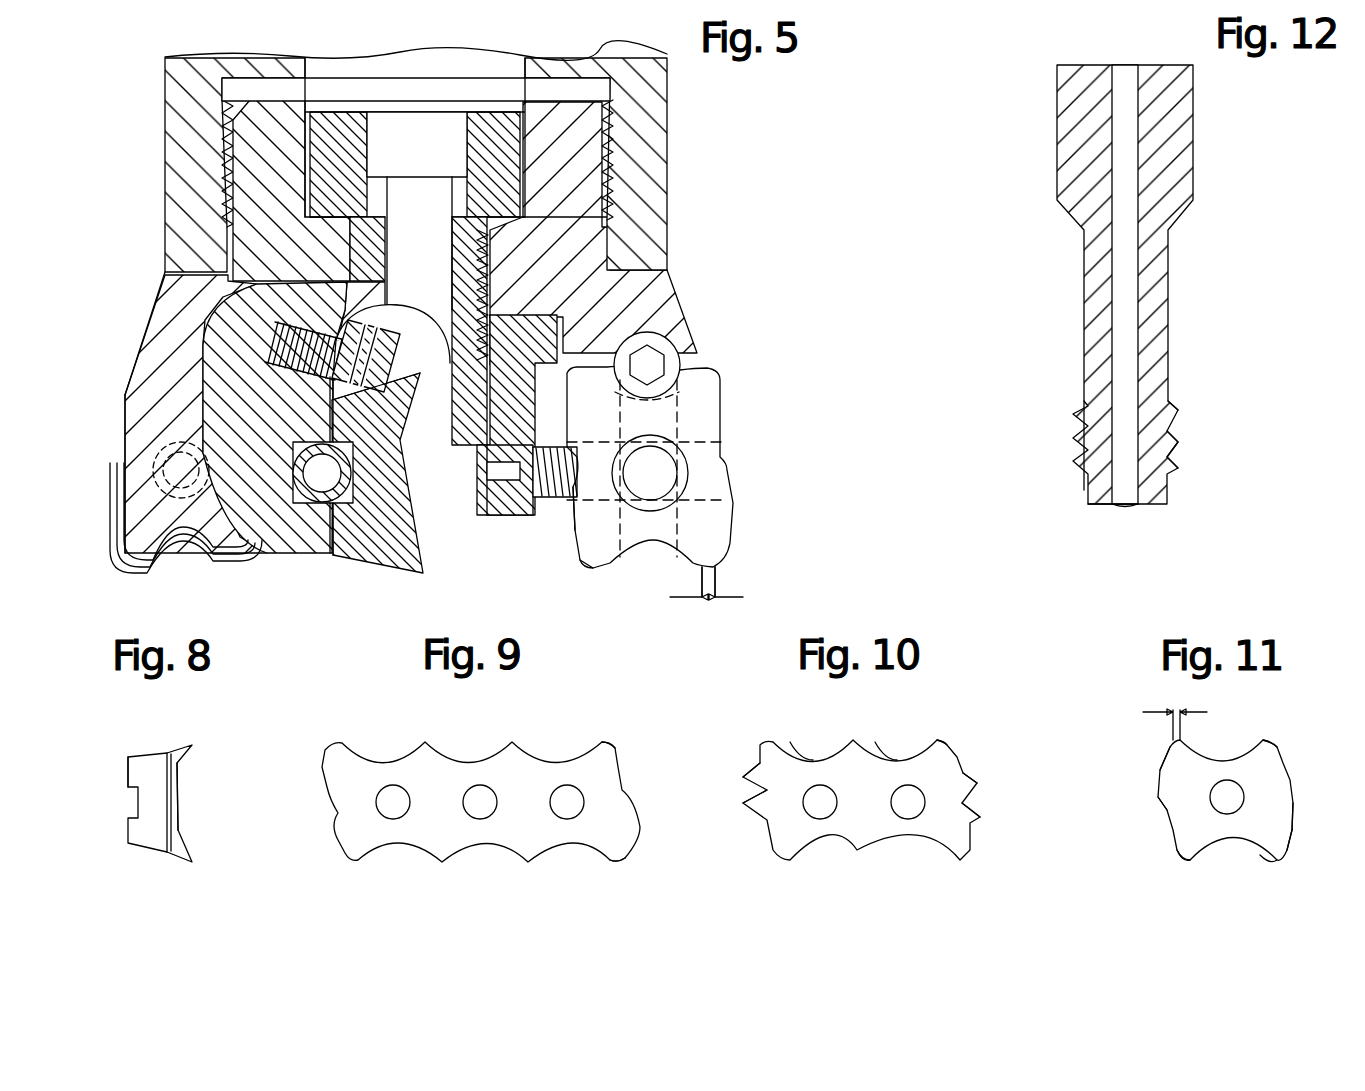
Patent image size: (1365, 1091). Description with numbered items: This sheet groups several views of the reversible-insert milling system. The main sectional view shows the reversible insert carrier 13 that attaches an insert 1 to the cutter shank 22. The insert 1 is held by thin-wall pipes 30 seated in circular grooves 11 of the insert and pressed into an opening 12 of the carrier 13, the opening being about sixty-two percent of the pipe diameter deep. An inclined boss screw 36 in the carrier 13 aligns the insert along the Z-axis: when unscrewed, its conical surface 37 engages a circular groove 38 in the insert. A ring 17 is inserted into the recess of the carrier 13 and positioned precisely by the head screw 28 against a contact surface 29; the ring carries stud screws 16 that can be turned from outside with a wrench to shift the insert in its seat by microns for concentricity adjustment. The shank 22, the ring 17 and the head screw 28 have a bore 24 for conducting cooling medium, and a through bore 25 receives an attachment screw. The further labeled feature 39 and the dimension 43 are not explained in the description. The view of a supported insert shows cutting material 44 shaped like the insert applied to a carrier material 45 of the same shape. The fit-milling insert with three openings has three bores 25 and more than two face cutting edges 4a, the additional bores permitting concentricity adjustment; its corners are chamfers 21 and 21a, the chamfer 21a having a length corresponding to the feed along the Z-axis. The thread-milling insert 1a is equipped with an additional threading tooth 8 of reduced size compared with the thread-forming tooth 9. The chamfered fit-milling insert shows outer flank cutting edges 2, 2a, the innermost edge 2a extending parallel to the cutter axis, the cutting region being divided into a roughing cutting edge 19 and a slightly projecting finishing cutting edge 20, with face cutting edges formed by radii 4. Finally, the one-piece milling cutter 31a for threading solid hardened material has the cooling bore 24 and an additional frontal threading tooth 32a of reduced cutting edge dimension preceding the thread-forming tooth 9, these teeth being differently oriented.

In FIG. 5, the reversible insert 1 is at (697, 403).
In FIG. 9, the reversible insert 1 is at (437, 760).
In FIG. 11, the reversible insert 1 is at (1290, 780).
In FIG. 10, the chain link plate 1a is at (858, 838).
In FIG. 5, the outer flank cutting edge 2 is at (737, 533).
In FIG. 12, the outer flank cutting edge 2 is at (1083, 494).
In FIG. 5, the outer flank cutting edge 2a is at (577, 540).
In FIG. 5, the radii 4 is at (593, 568).
In FIG. 12, the radii 4 is at (1092, 512).
In FIG. 12, the face cutting edge 4a is at (1108, 510).
In FIG. 10, the face cutting edge 4a is at (845, 735).
In FIG. 10, the additional threading tooth 8 is at (750, 782).
In FIG. 12, the thread-forming tooth 9 is at (1178, 412).
In FIG. 10, the thread-forming tooth 9 is at (745, 803).
In FIG. 8, the groove 11 is at (128, 805).
In FIG. 5, the opening 12 is at (287, 560).
In FIG. 5, the reversible insert carrier 13 is at (667, 327).
In FIG. 5, the stud screw 16 is at (487, 502).
In FIG. 5, the ring 17 is at (543, 340).
In FIG. 5, the roughing cutting edge 19 is at (428, 548).
In FIG. 11, the roughing cutting edge 19 is at (1162, 765).
In FIG. 11, the finishing cutting edge 20 is at (1160, 797).
In FIG. 9, the chamfer 21 is at (627, 855).
In FIG. 11, the chamfer 21 is at (1285, 858).
In FIG. 9, the chamfer 21a is at (617, 750).
In FIG. 10, the chamfer 21a is at (957, 750).
In FIG. 11, the chamfer 21a is at (1277, 750).
In FIG. 5, the cutter shank 22 is at (642, 117).
In FIG. 5, the bore 24 is at (400, 197).
In FIG. 12, the bore 24 is at (1127, 318).
In FIG. 9, the through bore 25 is at (393, 790).
In FIG. 5, the head screw 28 is at (330, 142).
In FIG. 5, the contact surface 29 is at (512, 323).
In FIG. 5, the thin-wall pipe 30 is at (340, 560).
In FIG. 12, the one-piece milling cutter 31a is at (1170, 122).
In FIG. 12, the additional threading tooth 32a is at (1180, 468).
In FIG. 5, the inclined boss screw 36 is at (388, 327).
In FIG. 5, the conical surface 37 is at (393, 350).
In FIG. 5, the circular groove 38 is at (420, 375).
In FIG. 5, the side wall 39 is at (217, 338).
In FIG. 5, the thickness 43 is at (713, 603).
In FIG. 11, the thickness 43 is at (1173, 740).
In FIG. 8, the cutting material 44 is at (185, 757).
In FIG. 8, the carrier material 45 is at (128, 775).